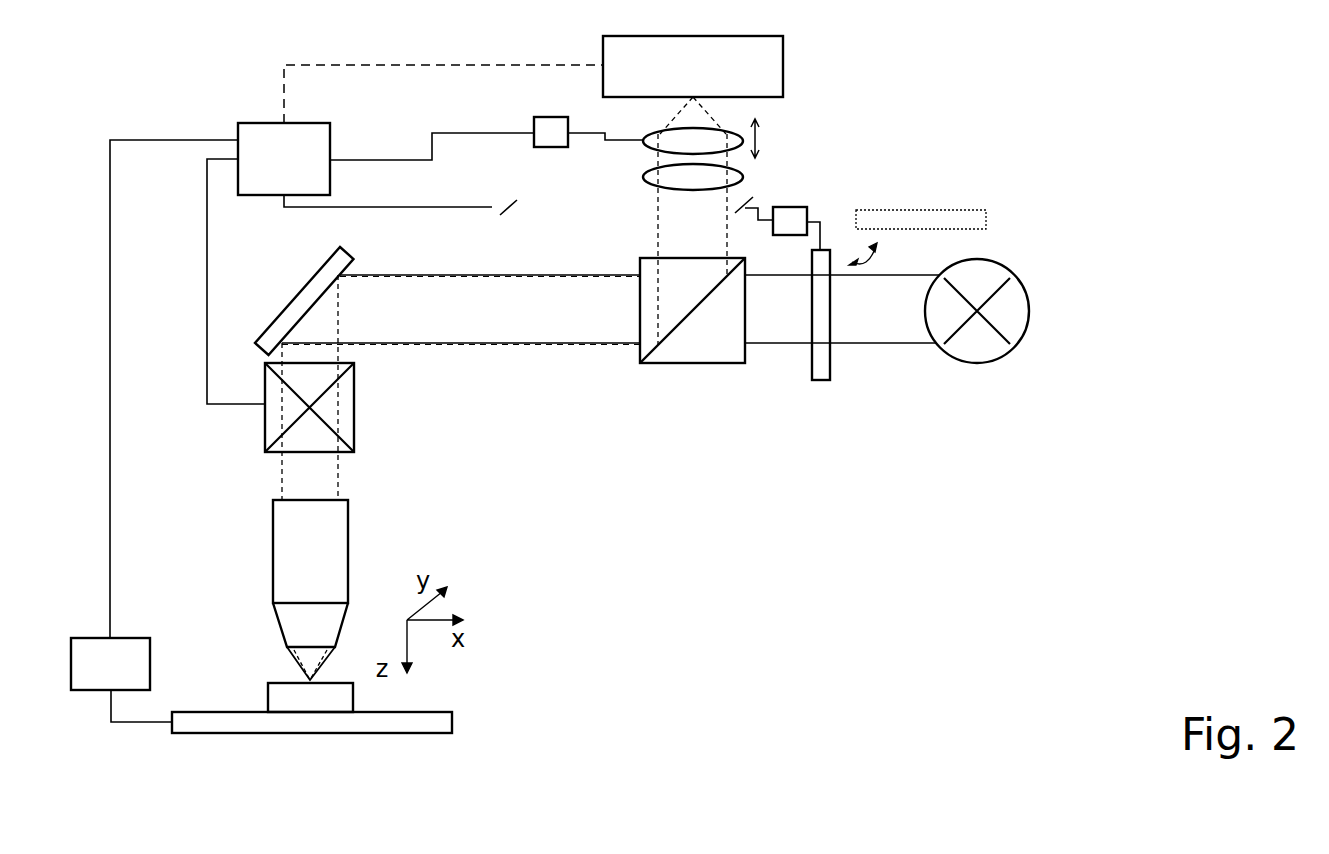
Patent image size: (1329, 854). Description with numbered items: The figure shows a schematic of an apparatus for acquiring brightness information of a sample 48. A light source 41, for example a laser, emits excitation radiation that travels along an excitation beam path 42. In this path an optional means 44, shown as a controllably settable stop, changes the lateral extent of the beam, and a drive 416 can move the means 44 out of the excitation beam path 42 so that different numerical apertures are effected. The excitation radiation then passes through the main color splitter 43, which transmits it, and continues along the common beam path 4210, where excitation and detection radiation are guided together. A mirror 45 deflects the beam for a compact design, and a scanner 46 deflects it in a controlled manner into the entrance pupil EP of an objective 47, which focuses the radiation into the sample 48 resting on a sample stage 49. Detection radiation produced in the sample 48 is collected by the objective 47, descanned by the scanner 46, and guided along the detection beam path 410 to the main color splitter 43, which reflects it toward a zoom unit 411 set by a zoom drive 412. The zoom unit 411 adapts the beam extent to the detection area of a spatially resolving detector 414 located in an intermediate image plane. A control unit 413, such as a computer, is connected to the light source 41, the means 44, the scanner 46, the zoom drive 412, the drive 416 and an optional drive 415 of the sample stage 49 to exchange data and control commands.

The light source 41 is at (1002, 358).
The excitation beam path 42 is at (915, 345).
The main color splitter 43 is at (702, 363).
The means for the controlled change of an extent of the beam 44 is at (943, 210).
The mirror 45 is at (303, 287).
The scanner 46 is at (354, 407).
The objective 47 is at (273, 553).
The sample 48 is at (278, 683).
The sample stage 49 is at (430, 712).
The detection beam path 410 is at (657, 220).
The zoom unit 411 is at (645, 180).
The zoom drive 412 is at (550, 117).
The control unit 413 is at (258, 175).
The spatially resolving detector 414 is at (668, 80).
The drive of the sample stage 415 is at (85, 682).
The drive 416 is at (790, 208).
The common beam path 4210 is at (552, 345).
The entrance pupil EP is at (280, 498).